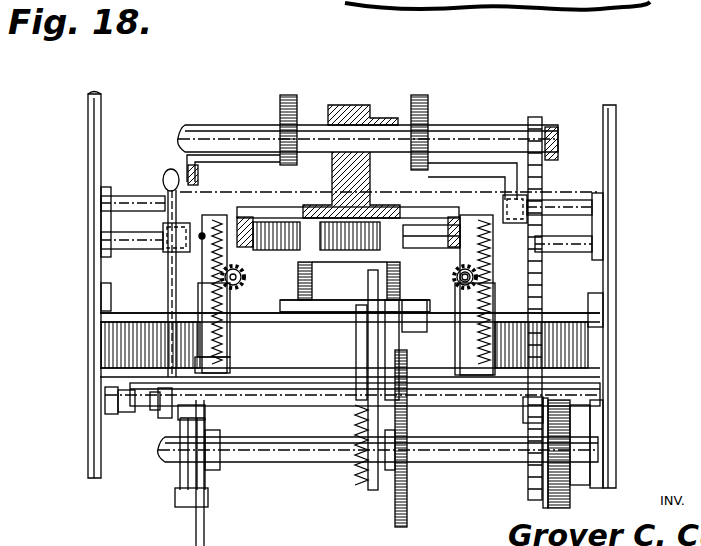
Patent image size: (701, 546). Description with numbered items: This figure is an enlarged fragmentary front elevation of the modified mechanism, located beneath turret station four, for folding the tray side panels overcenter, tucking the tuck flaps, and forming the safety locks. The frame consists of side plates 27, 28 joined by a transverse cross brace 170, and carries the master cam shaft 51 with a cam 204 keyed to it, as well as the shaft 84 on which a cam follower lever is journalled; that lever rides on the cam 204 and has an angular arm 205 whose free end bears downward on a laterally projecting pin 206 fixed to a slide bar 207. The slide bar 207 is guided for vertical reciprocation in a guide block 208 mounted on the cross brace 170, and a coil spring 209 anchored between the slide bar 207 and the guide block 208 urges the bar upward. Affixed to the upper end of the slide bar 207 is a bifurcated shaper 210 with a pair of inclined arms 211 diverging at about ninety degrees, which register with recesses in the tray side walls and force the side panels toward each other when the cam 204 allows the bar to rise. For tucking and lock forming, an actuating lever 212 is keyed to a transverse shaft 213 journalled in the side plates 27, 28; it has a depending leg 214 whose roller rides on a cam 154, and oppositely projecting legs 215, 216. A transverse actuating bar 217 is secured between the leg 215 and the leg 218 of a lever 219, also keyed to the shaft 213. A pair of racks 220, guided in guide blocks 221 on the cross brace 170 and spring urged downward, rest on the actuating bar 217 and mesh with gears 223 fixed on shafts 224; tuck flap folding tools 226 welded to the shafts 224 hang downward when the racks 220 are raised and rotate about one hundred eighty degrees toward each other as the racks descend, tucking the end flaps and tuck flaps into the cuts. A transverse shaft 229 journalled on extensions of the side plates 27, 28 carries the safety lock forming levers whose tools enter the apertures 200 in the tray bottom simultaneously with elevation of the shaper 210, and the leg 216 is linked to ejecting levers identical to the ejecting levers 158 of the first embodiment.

The side plate 27 is at (88, 232).
The side plate 28 is at (612, 171).
The master cam shaft 51 is at (282, 462).
The shaft 84 is at (338, 322).
The cam 154 is at (204, 532).
The ejecting levers 158 is at (398, 106).
The transverse cross brace 170 is at (110, 354).
The apertures 200 is at (250, 215).
The cam 204 is at (407, 512).
The arm 205 is at (415, 332).
The pin 206 is at (399, 370).
The slide bar 207 is at (371, 490).
The guide block 208 is at (367, 370).
The coil spring 209 is at (356, 480).
The bifurcated shaper 210 is at (362, 300).
The inclined arms 211 is at (298, 286).
The actuating lever 212 is at (180, 468).
The transverse shaft 213 is at (130, 414).
The depending leg 214 is at (175, 498).
The leg 215 is at (205, 420).
The leg 216 is at (160, 390).
The actuating bar 217 is at (305, 368).
The leg 218 is at (535, 423).
The lever 219 is at (548, 412).
The racks 220 is at (212, 266).
The guide blocks 221 is at (230, 344).
The gears 223 is at (244, 270).
The shafts 224 is at (458, 284).
The tuck flap folding tools 226 is at (425, 300).
The transverse shaft 229 is at (544, 262).